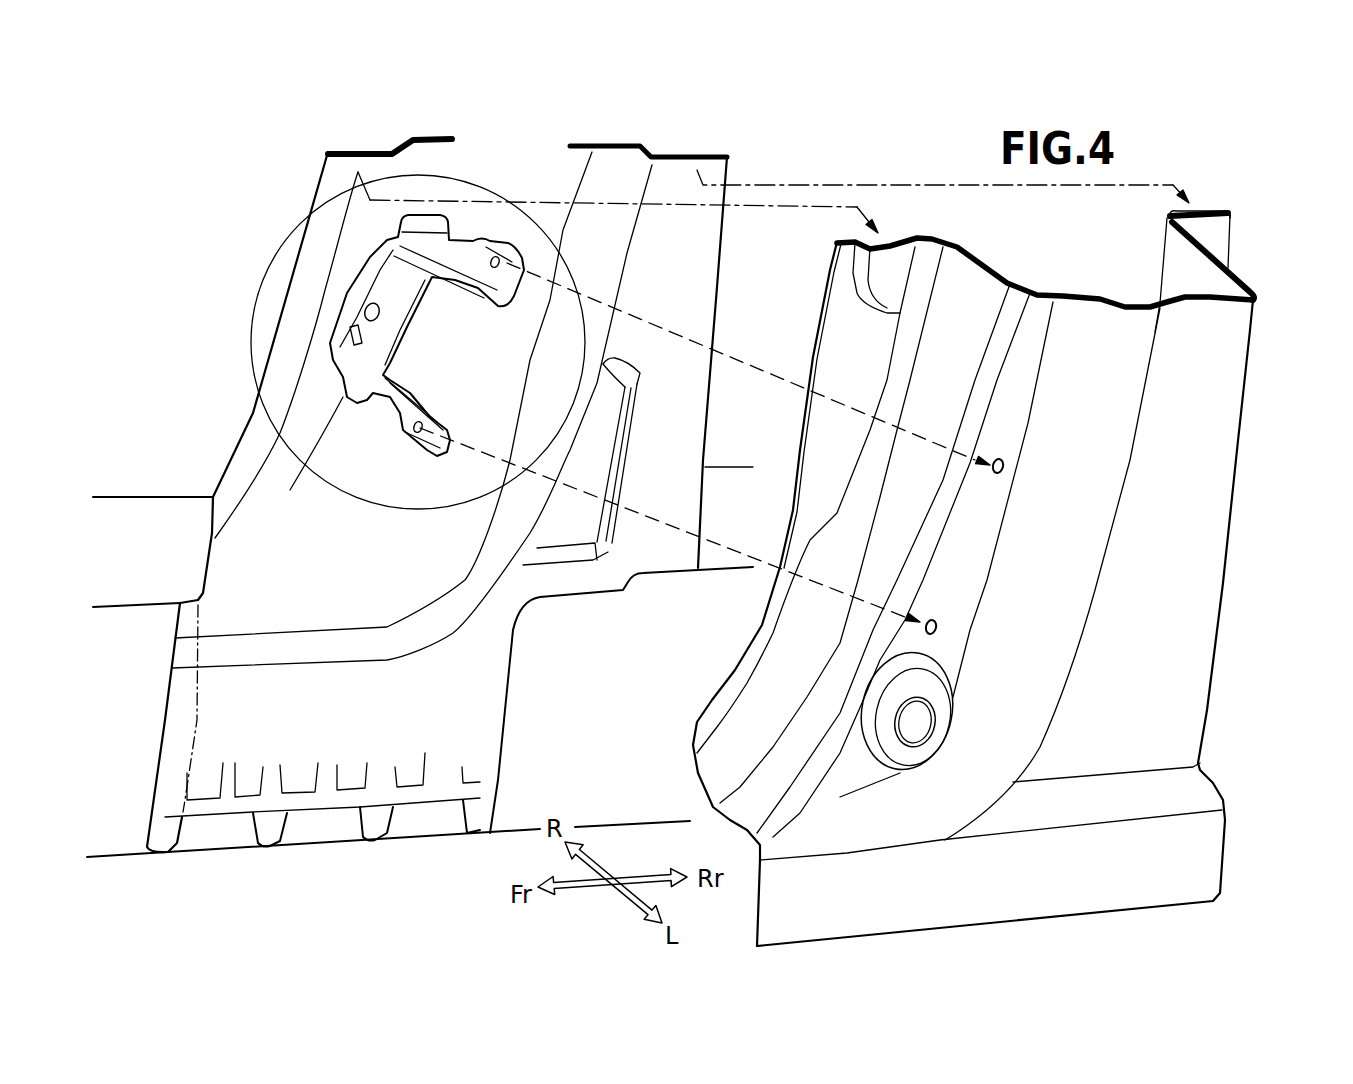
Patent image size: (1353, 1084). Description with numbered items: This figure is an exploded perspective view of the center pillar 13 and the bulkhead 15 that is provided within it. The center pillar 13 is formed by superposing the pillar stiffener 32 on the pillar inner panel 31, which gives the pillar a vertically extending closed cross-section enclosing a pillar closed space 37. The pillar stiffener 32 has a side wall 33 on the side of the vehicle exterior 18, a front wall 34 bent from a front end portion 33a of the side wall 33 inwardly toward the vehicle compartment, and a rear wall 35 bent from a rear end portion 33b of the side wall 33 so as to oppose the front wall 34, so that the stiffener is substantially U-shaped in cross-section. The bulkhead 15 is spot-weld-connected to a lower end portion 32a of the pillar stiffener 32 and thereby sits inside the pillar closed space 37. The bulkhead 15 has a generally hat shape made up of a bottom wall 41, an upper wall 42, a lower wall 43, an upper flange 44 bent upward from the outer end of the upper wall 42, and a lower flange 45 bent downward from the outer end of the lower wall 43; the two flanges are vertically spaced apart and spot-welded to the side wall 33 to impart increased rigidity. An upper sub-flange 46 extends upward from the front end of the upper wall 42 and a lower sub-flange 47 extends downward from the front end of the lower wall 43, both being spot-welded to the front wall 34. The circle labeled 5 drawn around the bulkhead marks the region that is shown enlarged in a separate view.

The center pillar 13 is at (233, 233).
The bulkhead 15 is at (348, 294).
The vehicle exterior 18 is at (630, 720).
The pillar inner panel 31 is at (318, 185).
The pillar stiffener 32 is at (820, 339).
The lower end portion 32a is at (1130, 720).
The side wall 33 is at (973, 550).
The front end portion 33a is at (960, 620).
The rear end portion 33b is at (1200, 577).
The front wall 34 is at (903, 492).
The rear wall 35 is at (1203, 278).
The pillar closed space 37 is at (1112, 278).
The bottom wall 41 is at (402, 312).
The upper wall 42 is at (482, 287).
The lower wall 43 is at (402, 397).
The upper flange 44 is at (507, 263).
The lower flange 45 is at (430, 440).
The upper sub-flange 46 is at (427, 227).
The lower sub-flange 47 is at (302, 457).
The enlarged detail portion 5 is at (340, 490).